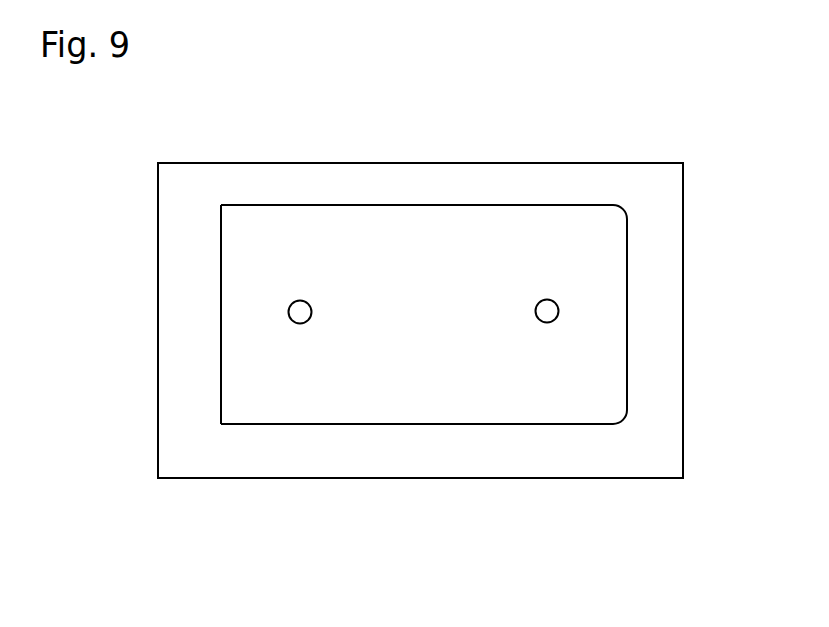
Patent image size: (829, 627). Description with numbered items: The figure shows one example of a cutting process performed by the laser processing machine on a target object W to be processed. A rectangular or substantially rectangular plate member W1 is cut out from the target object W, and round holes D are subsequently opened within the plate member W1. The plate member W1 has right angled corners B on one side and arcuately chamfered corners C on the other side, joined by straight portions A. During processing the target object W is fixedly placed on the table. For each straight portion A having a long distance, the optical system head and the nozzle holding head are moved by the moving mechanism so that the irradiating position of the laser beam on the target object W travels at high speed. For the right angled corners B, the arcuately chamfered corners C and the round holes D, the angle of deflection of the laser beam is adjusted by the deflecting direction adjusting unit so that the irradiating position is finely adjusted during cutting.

The target object to be processed W is at (468, 157).
The plate member W1 is at (430, 342).
The straight portion A is at (415, 205).
The right angled corner B is at (198, 192).
The arcuately chamfered corner C is at (625, 189).
The round hole D is at (300, 300).